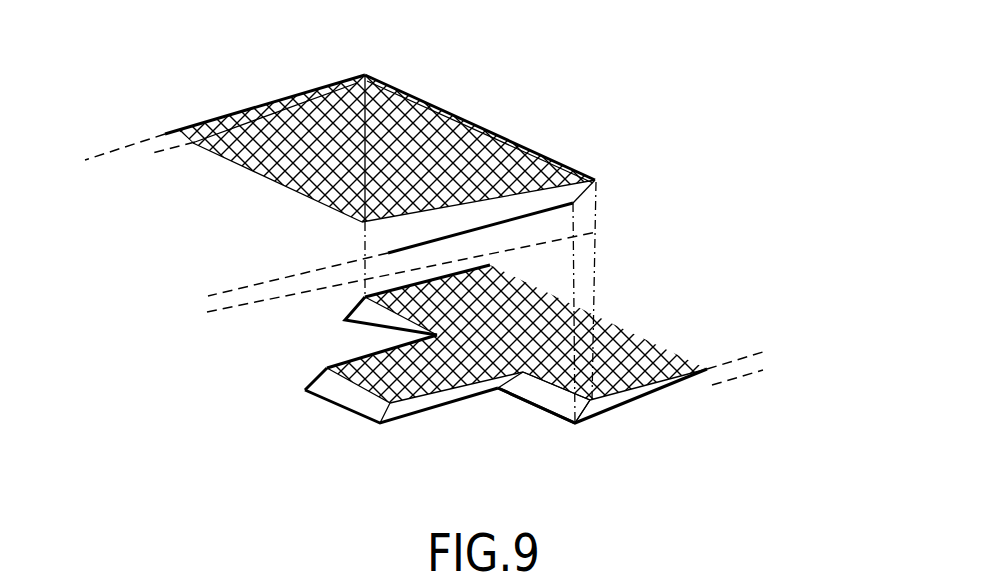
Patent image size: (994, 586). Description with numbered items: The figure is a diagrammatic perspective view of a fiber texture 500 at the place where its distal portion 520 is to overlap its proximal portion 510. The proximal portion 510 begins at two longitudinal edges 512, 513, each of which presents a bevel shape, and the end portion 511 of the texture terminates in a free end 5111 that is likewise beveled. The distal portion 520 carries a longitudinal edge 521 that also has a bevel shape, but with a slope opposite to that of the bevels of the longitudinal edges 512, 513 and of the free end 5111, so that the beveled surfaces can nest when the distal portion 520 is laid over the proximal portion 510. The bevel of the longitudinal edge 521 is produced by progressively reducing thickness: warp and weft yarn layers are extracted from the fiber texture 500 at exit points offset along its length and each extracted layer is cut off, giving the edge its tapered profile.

The fiber texture 500 is at (429, 262).
The proximal portion 510 is at (509, 391).
The end portion 511 is at (389, 402).
The free end 5111 is at (365, 405).
The longitudinal edge 512 is at (565, 405).
The longitudinal edge 513 is at (370, 313).
The distal portion 520 is at (366, 215).
The longitudinal edge 521 is at (593, 186).